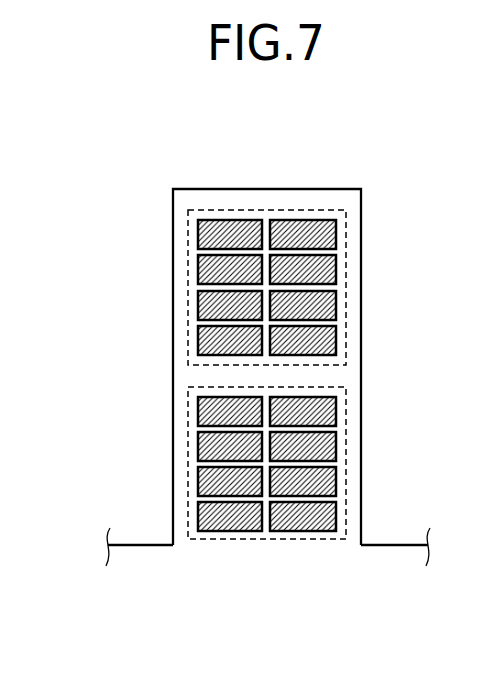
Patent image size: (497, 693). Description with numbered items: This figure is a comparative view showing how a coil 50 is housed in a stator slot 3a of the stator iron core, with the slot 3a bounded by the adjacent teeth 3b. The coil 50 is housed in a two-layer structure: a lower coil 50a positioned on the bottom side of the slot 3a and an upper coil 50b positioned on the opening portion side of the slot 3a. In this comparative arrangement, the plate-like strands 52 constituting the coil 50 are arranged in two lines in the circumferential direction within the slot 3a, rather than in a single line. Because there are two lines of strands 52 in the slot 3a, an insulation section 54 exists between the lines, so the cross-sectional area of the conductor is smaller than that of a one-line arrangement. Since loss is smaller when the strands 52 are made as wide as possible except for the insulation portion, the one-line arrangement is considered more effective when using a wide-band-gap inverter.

The slot 3a is at (328, 200).
The teeth 3b is at (134, 513).
The coil 50 is at (98, 288).
The lower coil 50a is at (224, 250).
The upper coil 50b is at (188, 438).
The strands 52 is at (210, 220).
The insulation section 54 is at (267, 234).